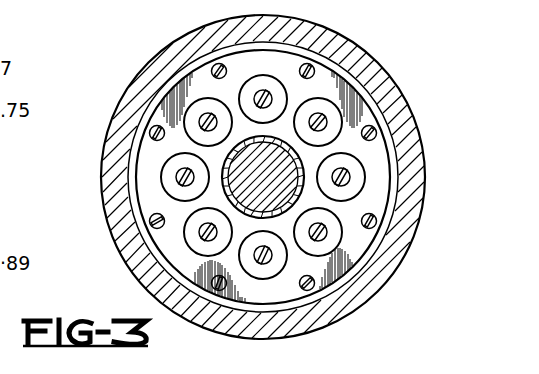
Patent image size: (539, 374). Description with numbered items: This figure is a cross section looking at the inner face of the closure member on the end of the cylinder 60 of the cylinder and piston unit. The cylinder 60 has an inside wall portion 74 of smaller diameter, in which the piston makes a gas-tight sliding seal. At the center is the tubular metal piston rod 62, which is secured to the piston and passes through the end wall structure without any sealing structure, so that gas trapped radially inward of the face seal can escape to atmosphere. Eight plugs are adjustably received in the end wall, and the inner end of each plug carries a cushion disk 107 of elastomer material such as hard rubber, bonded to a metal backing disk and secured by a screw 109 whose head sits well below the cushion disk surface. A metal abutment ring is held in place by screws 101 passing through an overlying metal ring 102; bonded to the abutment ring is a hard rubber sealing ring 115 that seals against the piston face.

The cylinder 60 is at (155, 58).
The wall portion of smaller diameter 74 is at (153, 106).
The screws 101 is at (310, 72).
The overlying metal ring 102 is at (360, 105).
The cushion disk 107 is at (162, 171).
The screw 109 is at (203, 230).
The sealing ring 115 is at (388, 142).
The piston rod 62 is at (298, 195).